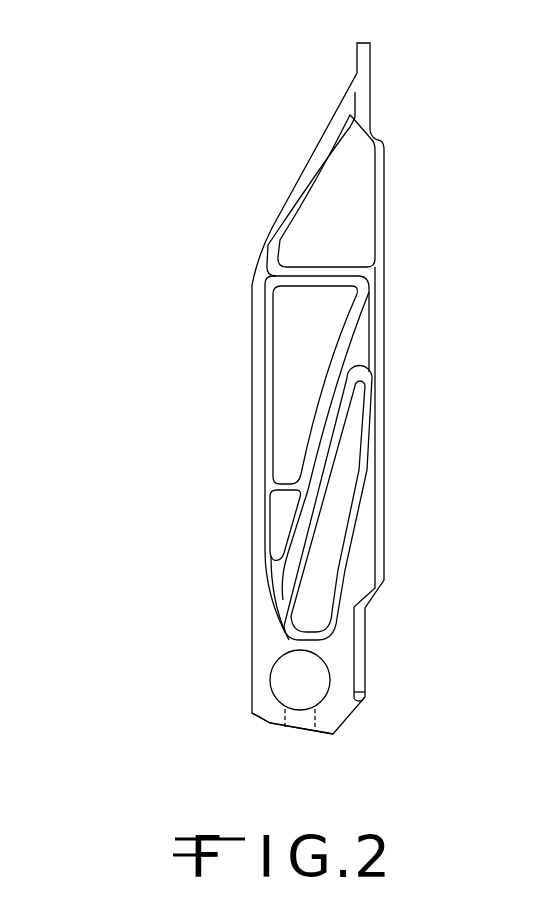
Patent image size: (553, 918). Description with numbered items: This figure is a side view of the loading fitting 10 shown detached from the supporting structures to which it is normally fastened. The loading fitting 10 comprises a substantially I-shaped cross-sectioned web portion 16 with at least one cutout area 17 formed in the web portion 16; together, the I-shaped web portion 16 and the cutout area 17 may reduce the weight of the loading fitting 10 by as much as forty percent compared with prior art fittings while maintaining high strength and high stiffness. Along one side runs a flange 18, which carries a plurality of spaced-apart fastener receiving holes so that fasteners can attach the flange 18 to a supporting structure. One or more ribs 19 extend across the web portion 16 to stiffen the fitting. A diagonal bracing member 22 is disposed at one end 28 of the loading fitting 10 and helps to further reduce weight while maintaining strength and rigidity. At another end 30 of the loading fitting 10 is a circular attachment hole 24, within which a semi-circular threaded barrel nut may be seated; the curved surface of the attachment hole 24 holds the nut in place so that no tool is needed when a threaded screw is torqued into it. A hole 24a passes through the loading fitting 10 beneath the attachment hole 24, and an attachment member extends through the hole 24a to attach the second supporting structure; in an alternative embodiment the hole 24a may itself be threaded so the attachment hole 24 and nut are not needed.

The loading fitting 10 is at (430, 125).
The web portion 16 is at (300, 353).
The cutout area 17 is at (297, 315).
The flange 18 is at (386, 345).
The rib 19 is at (330, 427).
The diagonal bracing member 22 is at (299, 181).
The attachment hole 24 is at (272, 695).
The hole 24a is at (303, 717).
The one end 28 is at (317, 140).
The another end 30 is at (252, 685).